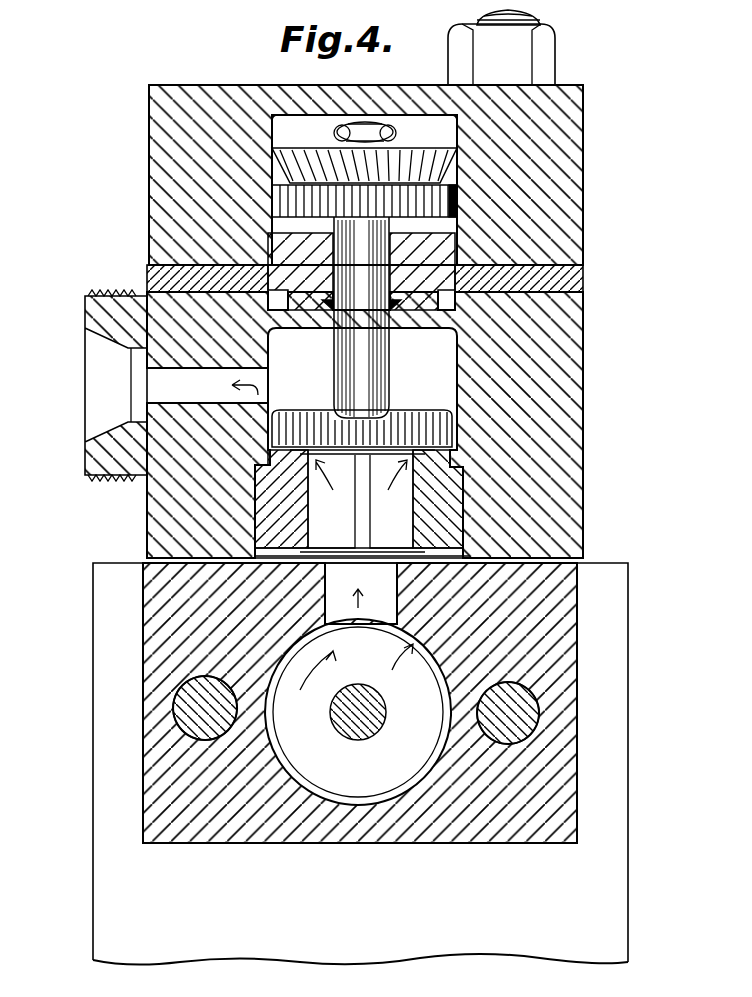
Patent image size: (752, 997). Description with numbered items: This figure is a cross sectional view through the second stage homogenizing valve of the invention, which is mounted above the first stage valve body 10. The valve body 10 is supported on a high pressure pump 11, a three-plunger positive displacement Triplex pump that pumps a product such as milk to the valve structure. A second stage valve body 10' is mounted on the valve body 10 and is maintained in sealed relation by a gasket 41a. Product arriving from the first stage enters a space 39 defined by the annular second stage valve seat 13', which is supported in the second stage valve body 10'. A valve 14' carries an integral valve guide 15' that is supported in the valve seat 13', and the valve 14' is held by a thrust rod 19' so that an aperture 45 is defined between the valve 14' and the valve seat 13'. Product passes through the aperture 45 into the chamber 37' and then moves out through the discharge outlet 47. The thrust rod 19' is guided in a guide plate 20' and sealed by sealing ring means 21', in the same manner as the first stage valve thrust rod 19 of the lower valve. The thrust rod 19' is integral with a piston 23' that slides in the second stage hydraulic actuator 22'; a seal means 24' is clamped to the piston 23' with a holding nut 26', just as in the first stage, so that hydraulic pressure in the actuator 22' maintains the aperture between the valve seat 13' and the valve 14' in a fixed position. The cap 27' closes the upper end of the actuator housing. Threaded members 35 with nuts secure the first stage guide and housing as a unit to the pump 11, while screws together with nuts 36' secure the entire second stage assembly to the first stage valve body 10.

The valve body 10 is at (383, 703).
The second stage valve body 10' is at (589, 425).
The high pressure pump 11 is at (118, 892).
The second stage valve seat 13' is at (320, 499).
The valve 14' is at (362, 419).
The valve guide 15' is at (395, 499).
The valve thrust rod 19 is at (327, 780).
The thrust rod 19' is at (381, 317).
The guide plate 20' is at (387, 278).
The sealing ring means 21' is at (446, 271).
The second stage hydraulic actuator 22' is at (388, 175).
The piston 23' is at (446, 190).
The seal means 24' is at (446, 161).
The holding nut 26' is at (385, 133).
The cap 27' is at (446, 131).
The threaded members 35 is at (520, 717).
The nuts 36' is at (530, 54).
The chamber 37' is at (386, 425).
The space 39 is at (480, 540).
The gasket 41a is at (487, 555).
The aperture 45 is at (455, 452).
The discharge outlet 47 is at (98, 420).